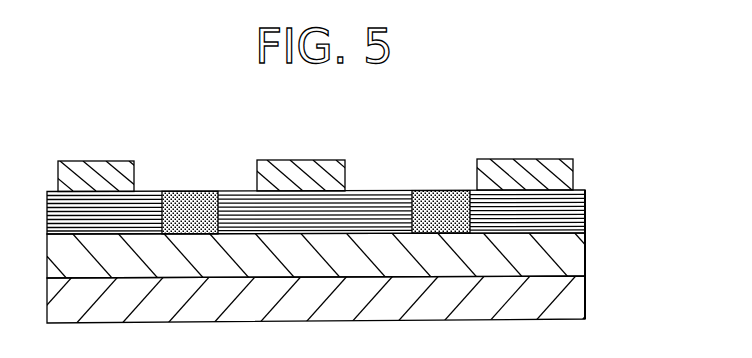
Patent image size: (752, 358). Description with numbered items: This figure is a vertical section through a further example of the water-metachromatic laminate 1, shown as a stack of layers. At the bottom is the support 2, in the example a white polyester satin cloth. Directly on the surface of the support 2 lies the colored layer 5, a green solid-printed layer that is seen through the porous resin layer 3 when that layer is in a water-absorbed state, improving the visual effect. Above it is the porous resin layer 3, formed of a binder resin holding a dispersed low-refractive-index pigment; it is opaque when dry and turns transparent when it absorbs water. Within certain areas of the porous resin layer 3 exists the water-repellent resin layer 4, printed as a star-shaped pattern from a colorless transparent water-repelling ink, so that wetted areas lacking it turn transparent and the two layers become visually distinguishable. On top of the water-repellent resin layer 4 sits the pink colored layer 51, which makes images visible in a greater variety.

The water-metachromatic laminate 1 is at (189, 156).
The support 2 is at (570, 302).
The porous resin layer 3 is at (437, 200).
The water-repellent resin layer 4 is at (573, 212).
The colored layer 5 is at (568, 258).
The colored layer 51 is at (562, 171).